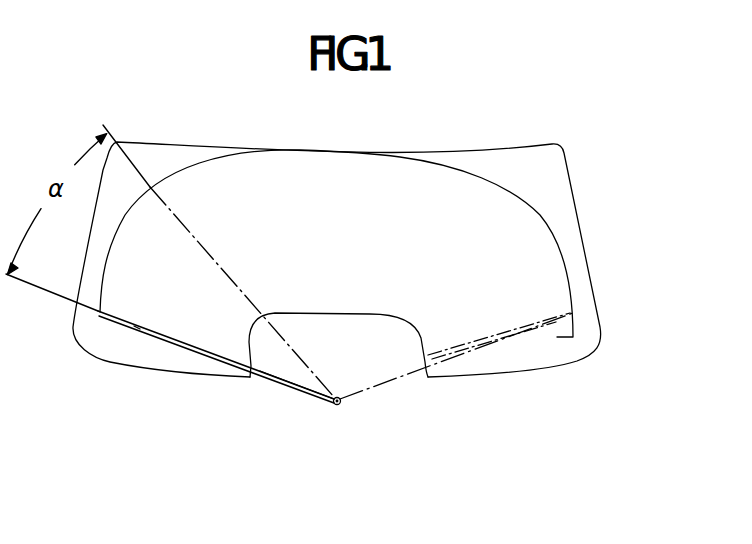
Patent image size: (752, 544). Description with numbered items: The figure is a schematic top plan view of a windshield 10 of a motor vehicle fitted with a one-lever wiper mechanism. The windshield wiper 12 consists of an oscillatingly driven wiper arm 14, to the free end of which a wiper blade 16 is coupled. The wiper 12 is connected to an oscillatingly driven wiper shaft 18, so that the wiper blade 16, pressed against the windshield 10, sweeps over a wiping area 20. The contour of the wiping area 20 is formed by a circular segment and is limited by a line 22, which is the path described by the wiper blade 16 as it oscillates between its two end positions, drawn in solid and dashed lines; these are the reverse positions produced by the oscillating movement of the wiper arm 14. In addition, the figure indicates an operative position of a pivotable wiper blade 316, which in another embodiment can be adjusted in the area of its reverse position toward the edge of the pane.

The windshield 10 is at (568, 215).
The windshield wiper 12 is at (199, 352).
The wiper arm 14 is at (285, 385).
The wiper blade 16 is at (137, 328).
The wiper shaft 18 is at (339, 405).
The wiping area 20 is at (428, 185).
The line 22 is at (527, 199).
The wiper blade 316 is at (511, 341).